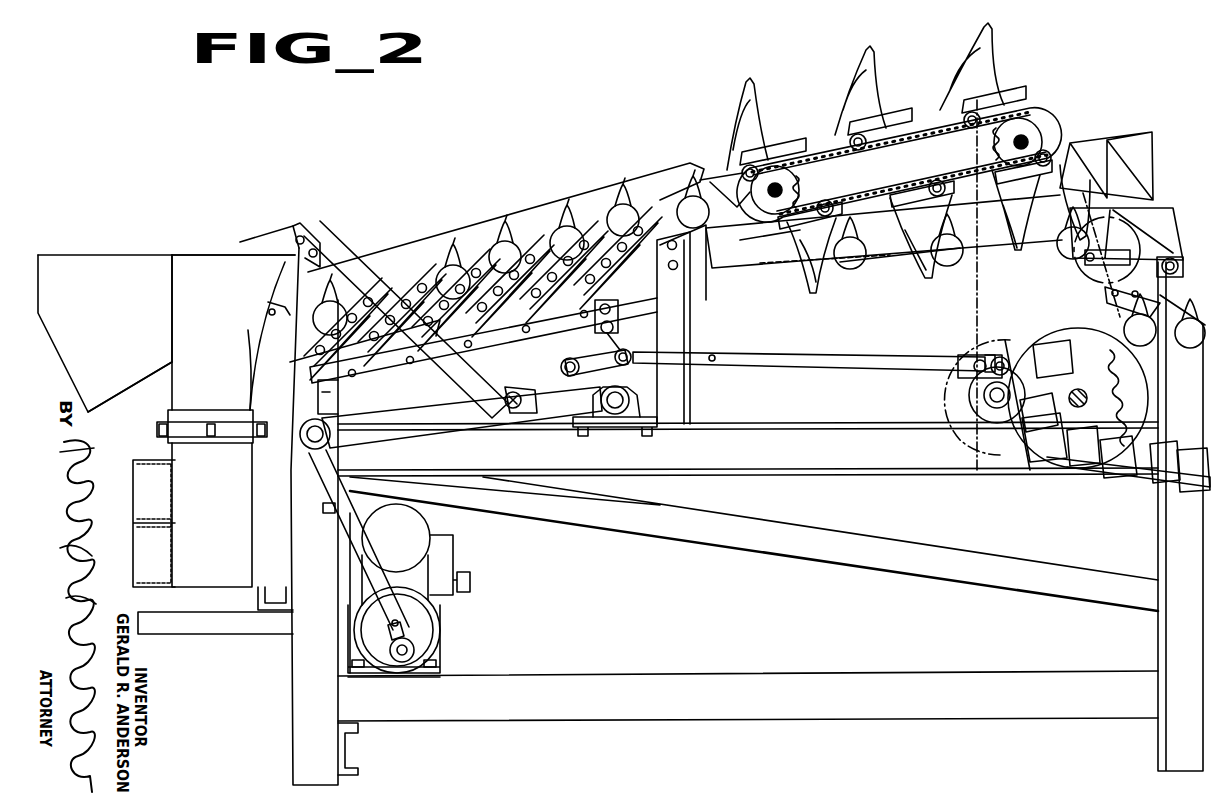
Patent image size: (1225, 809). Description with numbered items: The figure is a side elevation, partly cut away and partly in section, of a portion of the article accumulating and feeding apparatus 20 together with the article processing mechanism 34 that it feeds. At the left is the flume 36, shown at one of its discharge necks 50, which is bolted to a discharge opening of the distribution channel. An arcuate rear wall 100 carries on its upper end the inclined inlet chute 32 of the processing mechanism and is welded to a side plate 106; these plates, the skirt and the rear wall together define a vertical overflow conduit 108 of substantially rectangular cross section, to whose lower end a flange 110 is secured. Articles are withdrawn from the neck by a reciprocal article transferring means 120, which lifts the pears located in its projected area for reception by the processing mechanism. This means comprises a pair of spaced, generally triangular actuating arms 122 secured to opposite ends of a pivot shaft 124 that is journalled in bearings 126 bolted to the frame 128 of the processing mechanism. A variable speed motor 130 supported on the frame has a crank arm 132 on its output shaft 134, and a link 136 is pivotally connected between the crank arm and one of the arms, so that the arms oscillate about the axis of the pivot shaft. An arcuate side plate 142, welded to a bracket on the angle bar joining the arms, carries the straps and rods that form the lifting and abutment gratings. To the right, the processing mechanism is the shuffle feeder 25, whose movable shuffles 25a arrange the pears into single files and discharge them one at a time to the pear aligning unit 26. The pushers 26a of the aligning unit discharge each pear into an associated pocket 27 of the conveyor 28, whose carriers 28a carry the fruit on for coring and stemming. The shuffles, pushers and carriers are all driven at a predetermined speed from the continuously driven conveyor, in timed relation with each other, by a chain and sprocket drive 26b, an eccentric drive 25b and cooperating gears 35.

The article accumulating and feeding apparatus 20 is at (286, 199).
The shuffle feeder 25 is at (437, 242).
The movable shuffles 25a is at (530, 260).
The eccentric drive 25b is at (960, 392).
The pear aligning unit 26 is at (771, 108).
The pushers 26a is at (922, 274).
The chain and sprocket drive 26b is at (973, 302).
The pocket 27 is at (1103, 340).
The conveyor 28 is at (1027, 352).
The carriers 28a is at (1140, 370).
The inlet chute 32 is at (272, 312).
The article processing mechanism 34 is at (673, 150).
The cooperating gears 35 is at (1012, 452).
The flume 36 is at (73, 253).
The flume discharge neck 50 is at (124, 312).
The arcuate rear wall 100 is at (246, 372).
The side plate 106 is at (233, 347).
The vertical overflow conduit 108 is at (175, 388).
The flange 110 is at (228, 425).
The reciprocal article transferring means 120 is at (231, 245).
The actuating arms 122 is at (470, 395).
The pivot shaft 124 is at (513, 410).
The bearings 126 is at (565, 412).
The frame 128 is at (708, 466).
The variable speed motor 130 is at (432, 656).
The crank arm 132 is at (410, 636).
The output shaft 134 is at (407, 620).
The link 136 is at (368, 552).
The arcuate side plate 142 is at (258, 240).